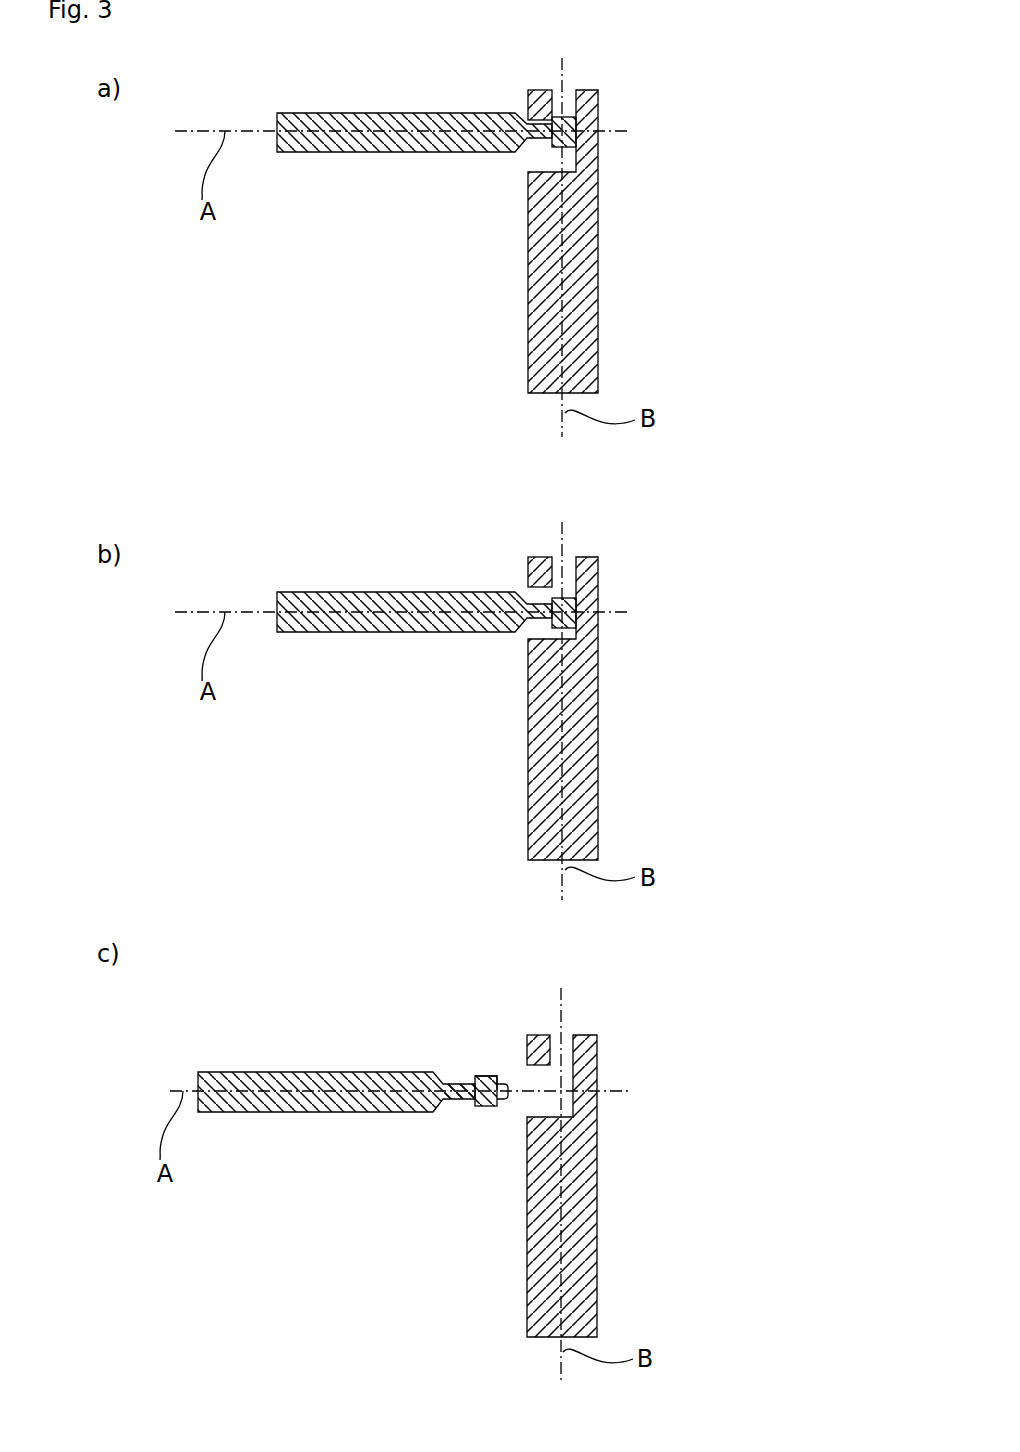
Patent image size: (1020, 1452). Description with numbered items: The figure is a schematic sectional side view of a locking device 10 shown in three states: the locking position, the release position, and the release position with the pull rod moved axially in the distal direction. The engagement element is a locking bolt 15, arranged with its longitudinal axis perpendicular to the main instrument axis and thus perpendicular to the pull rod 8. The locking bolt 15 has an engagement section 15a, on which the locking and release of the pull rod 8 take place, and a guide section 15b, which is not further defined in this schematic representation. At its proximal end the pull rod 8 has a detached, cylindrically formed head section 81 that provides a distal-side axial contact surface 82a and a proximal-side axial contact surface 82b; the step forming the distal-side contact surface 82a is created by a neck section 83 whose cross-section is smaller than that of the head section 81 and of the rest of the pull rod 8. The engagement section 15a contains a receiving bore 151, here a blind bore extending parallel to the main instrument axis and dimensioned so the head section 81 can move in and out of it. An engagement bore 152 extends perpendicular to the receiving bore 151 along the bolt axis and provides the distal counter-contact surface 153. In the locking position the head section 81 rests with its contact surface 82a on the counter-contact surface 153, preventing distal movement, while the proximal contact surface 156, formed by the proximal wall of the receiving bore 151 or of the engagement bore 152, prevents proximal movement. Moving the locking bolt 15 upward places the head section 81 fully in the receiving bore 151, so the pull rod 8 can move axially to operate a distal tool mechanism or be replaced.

The pull rod 8 is at (420, 112).
The locking device 10 is at (598, 60).
The locking bolt 15 is at (598, 322).
The engagement section 15a is at (757, 92).
The guide section 15b is at (757, 258).
The head section 81 is at (482, 1075).
The distal-side axial contact surface 82a is at (475, 1076).
The proximal-side axial contact surface 82b is at (500, 1100).
The neck section 83 is at (452, 1100).
The receiving bore 151 is at (573, 1104).
The engagement bore 152 is at (568, 1038).
The distal counter-contact surface 153 is at (550, 1058).
The proximal contact surface 156 is at (570, 1060).